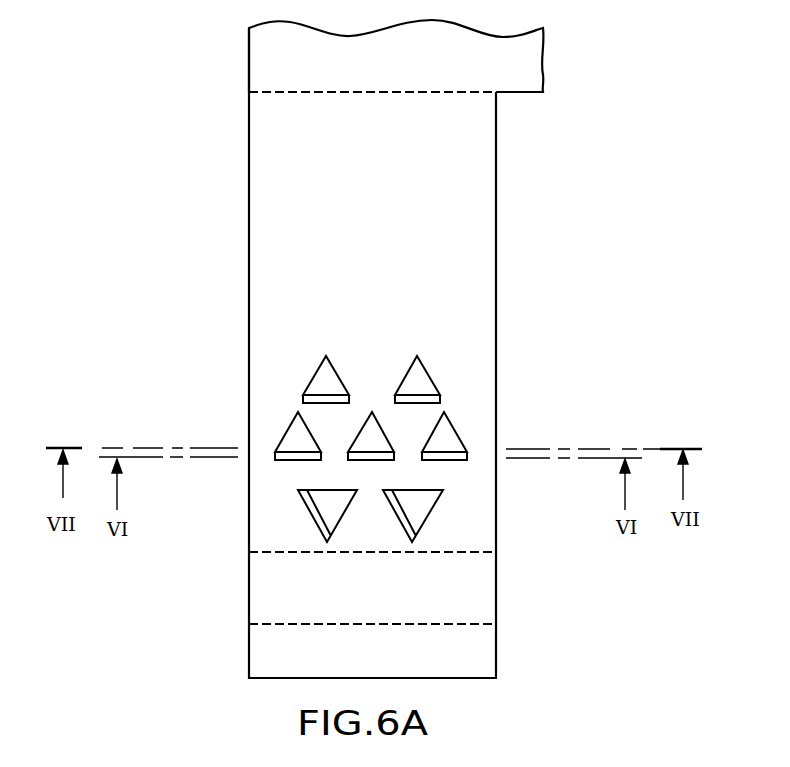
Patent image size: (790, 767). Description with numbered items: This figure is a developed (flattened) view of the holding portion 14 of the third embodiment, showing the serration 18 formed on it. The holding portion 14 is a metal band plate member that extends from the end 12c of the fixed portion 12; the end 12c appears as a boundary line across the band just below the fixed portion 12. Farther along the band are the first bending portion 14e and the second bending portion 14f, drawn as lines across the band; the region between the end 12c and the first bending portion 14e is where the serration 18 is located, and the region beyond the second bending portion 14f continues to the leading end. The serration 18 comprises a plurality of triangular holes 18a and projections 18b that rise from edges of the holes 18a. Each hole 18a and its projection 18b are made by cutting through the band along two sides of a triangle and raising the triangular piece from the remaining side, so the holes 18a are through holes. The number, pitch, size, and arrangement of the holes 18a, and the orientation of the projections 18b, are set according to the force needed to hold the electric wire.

The fixed portion 12 is at (262, 61).
The end of the fixed portion 12c is at (293, 93).
The holding portion 14 is at (497, 231).
The first bending portion 14e is at (280, 553).
The second bending portion 14f is at (275, 625).
The serration 18 is at (418, 437).
The triangular holes 18a is at (430, 383).
The projections 18b is at (447, 457).